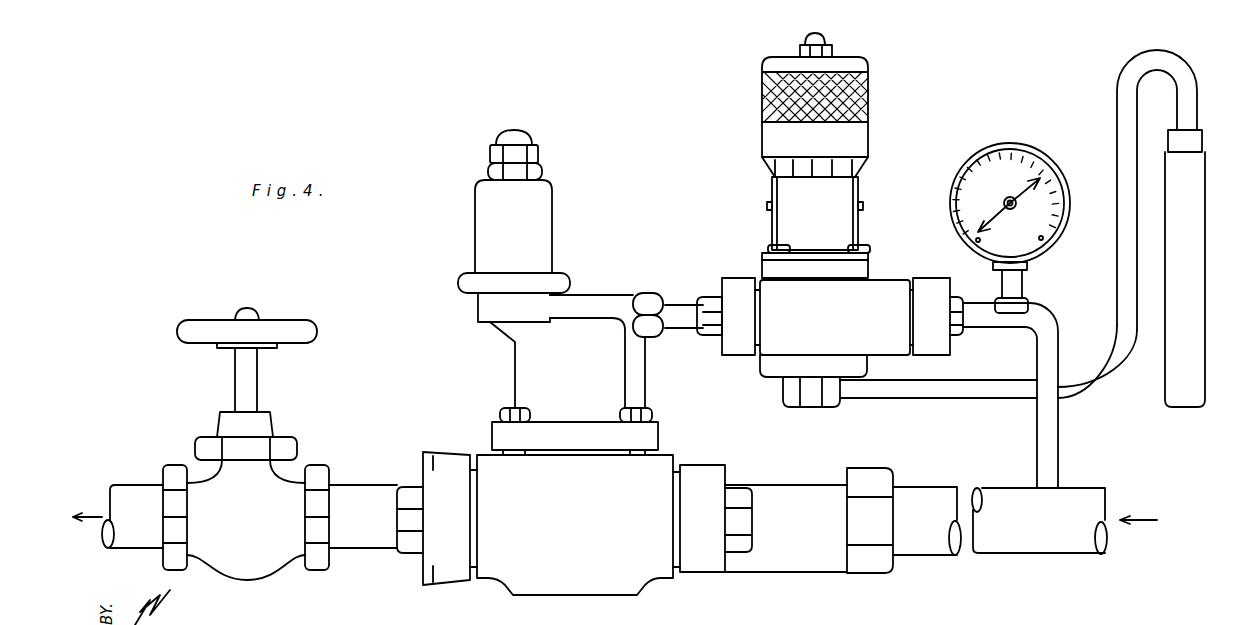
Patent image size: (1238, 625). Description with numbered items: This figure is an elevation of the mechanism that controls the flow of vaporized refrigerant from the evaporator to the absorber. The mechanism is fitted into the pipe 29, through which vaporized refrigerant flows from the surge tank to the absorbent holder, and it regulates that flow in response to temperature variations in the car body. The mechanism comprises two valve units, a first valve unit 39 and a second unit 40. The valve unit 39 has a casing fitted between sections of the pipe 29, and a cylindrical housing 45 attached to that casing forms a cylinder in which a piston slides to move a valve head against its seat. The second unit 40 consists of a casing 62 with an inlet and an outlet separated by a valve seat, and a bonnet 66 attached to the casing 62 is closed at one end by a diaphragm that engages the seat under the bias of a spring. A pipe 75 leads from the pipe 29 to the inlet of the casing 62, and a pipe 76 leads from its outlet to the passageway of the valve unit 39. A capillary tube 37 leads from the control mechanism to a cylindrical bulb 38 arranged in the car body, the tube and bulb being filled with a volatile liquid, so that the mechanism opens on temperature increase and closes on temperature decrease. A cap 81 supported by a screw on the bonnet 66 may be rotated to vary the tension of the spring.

The pipe 29 is at (1010, 545).
The capillary tube 37 is at (1122, 248).
The cylindrical bulb 38 is at (1192, 268).
The valve unit 39 is at (540, 576).
The second unit 40 is at (830, 225).
The cylindrical housing 45 is at (530, 366).
The casing 62 is at (870, 295).
The bonnet 66 is at (787, 221).
The pipe 75 is at (980, 307).
The pipe 76 is at (680, 310).
The cap 81 is at (853, 137).